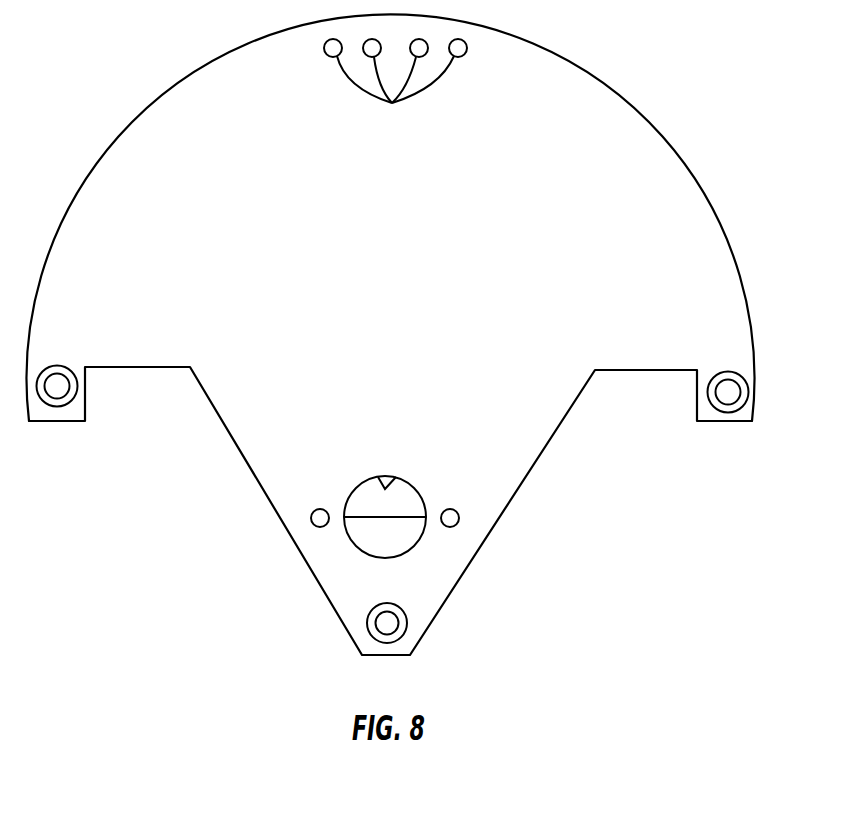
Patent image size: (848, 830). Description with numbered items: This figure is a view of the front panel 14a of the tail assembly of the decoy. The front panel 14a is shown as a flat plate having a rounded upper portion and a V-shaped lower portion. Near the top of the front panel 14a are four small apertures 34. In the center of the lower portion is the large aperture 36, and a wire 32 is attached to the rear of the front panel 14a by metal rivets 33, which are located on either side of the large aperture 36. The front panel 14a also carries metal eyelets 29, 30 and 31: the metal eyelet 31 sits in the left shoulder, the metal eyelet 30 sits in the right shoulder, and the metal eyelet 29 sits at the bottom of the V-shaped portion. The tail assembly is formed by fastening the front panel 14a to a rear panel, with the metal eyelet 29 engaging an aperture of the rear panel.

The front panel 14a is at (408, 275).
The small apertures 34 is at (395, 91).
The metal eyelet 31 is at (60, 399).
The metal eyelet 30 is at (728, 405).
The metal eyelet 29 is at (399, 623).
The wire 32 is at (390, 518).
The large aperture 36 is at (384, 487).
The metal rivets 33 is at (321, 509).